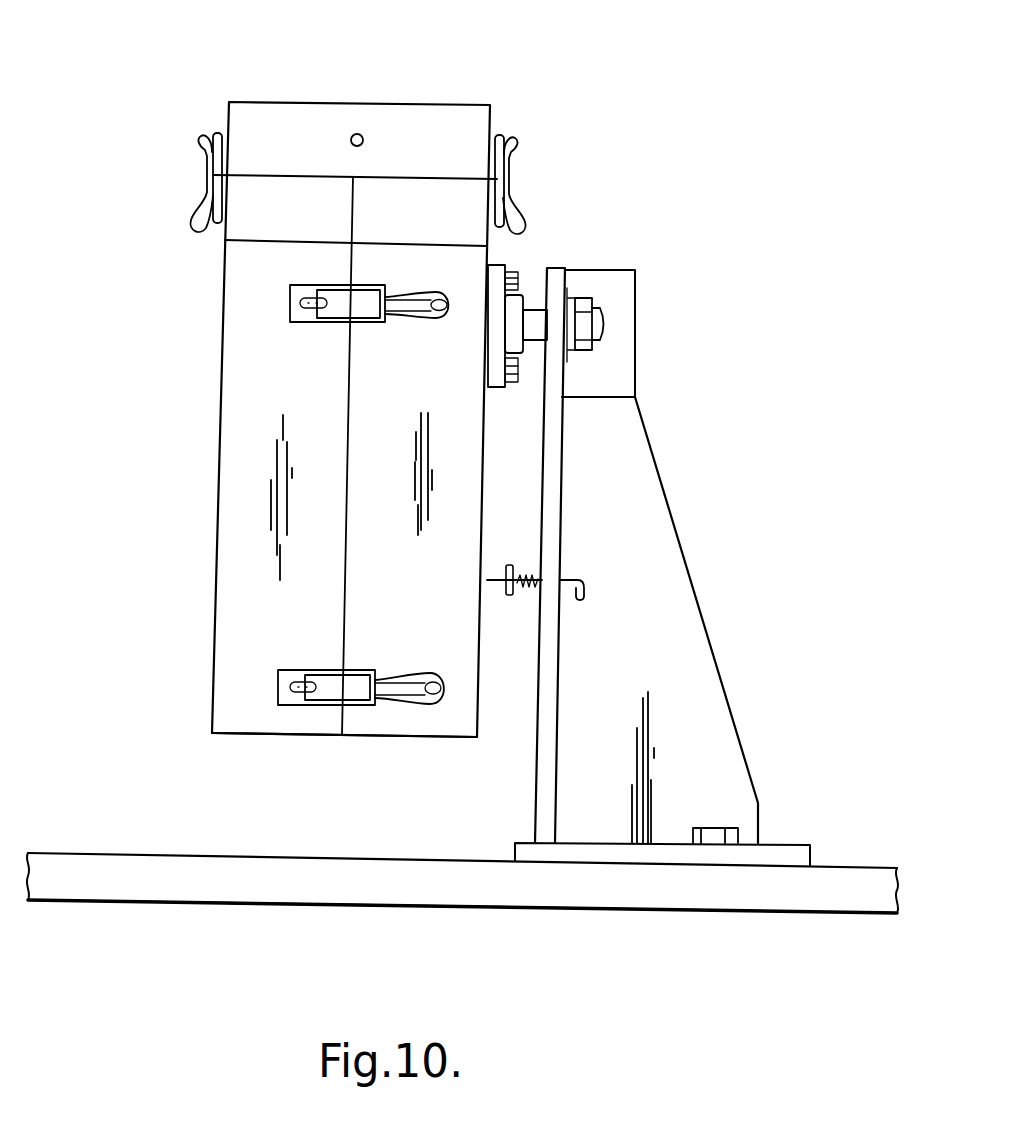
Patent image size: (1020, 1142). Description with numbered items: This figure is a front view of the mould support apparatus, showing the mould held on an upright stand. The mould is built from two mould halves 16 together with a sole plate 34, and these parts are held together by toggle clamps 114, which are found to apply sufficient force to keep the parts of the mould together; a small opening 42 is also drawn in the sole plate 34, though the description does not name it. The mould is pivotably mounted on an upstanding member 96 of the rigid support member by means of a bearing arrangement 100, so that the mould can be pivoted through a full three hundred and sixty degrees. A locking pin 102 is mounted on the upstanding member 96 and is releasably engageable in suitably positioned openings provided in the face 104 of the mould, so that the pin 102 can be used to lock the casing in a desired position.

The sole plate 34 is at (336, 115).
The hole 42 is at (362, 136).
The toggle clamps 114 is at (200, 173).
The mould halves 16 is at (233, 545).
The bearing arrangement 100 is at (535, 286).
The upstanding member 96 is at (556, 662).
The locking pin 102 is at (510, 600).
The face of the mould 104 is at (479, 708).